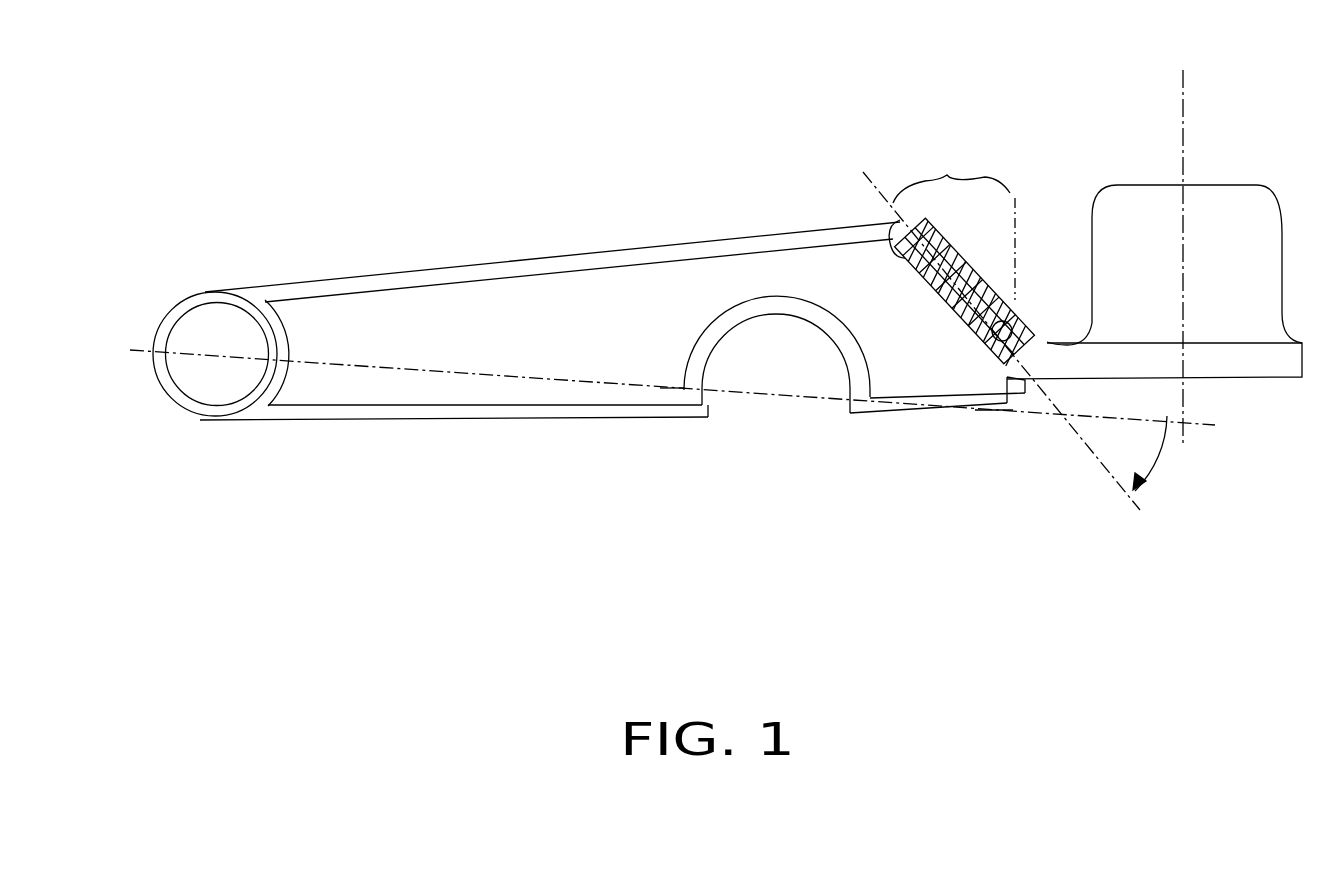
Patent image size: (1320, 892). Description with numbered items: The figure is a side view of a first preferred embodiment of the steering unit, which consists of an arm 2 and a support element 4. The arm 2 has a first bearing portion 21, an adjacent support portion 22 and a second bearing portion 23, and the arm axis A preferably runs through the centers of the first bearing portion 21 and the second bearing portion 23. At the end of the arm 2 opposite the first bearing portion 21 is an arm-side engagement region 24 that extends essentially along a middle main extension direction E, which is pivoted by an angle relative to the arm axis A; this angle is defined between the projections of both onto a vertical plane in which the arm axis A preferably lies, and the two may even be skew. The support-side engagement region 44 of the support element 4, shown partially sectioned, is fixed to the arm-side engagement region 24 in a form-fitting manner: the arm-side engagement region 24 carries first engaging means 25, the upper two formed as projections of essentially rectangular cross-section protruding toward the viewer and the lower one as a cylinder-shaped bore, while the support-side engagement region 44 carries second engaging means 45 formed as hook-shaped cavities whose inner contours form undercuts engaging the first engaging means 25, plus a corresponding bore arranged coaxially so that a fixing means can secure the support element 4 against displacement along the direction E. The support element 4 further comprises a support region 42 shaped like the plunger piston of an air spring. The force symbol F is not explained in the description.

The arm 2 is at (583, 252).
The first bearing portion 21 is at (203, 417).
The support portion 22 is at (486, 393).
The second bearing portion 23 is at (702, 405).
The arm-side engagement region 24 is at (948, 174).
The first engaging means 25 is at (913, 267).
The support element 4 is at (1140, 180).
The support region 42 is at (1217, 335).
The support-side engagement region 44 is at (1020, 320).
The second engaging means 45 is at (995, 300).
The arm axis A is at (661, 388).
The middle main extension direction E is at (1087, 443).
The force F is at (1183, 165).